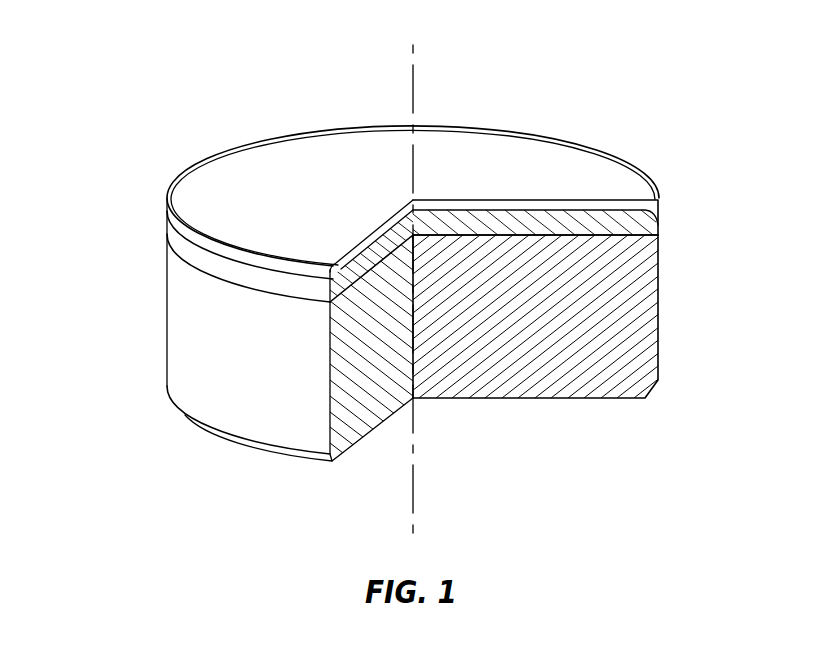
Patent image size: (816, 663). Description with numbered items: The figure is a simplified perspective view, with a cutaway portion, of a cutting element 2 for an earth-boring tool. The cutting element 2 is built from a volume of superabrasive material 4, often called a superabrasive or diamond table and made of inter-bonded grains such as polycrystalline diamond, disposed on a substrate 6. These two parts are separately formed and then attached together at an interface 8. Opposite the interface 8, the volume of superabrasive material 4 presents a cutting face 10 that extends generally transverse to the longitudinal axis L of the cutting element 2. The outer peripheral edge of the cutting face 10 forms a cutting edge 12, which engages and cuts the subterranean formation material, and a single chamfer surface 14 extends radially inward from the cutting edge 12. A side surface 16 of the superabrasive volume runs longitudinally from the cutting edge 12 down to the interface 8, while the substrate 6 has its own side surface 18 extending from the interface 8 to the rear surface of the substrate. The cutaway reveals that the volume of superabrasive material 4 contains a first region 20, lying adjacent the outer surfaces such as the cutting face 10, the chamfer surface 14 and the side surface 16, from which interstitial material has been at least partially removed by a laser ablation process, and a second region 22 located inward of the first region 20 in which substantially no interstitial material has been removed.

The cutting element 2 is at (155, 52).
The volume of superabrasive material 4 is at (667, 200).
The substrate 6 is at (638, 312).
The interface 8 is at (497, 233).
The cutting face 10 is at (313, 165).
The cutting edge 12 is at (167, 197).
The chamfer surface 14 is at (213, 248).
The side surface 16 is at (177, 238).
The side surface 18 is at (167, 323).
The first region 20 is at (547, 208).
The second region 22 is at (598, 222).
The longitudinal axis L is at (413, 511).